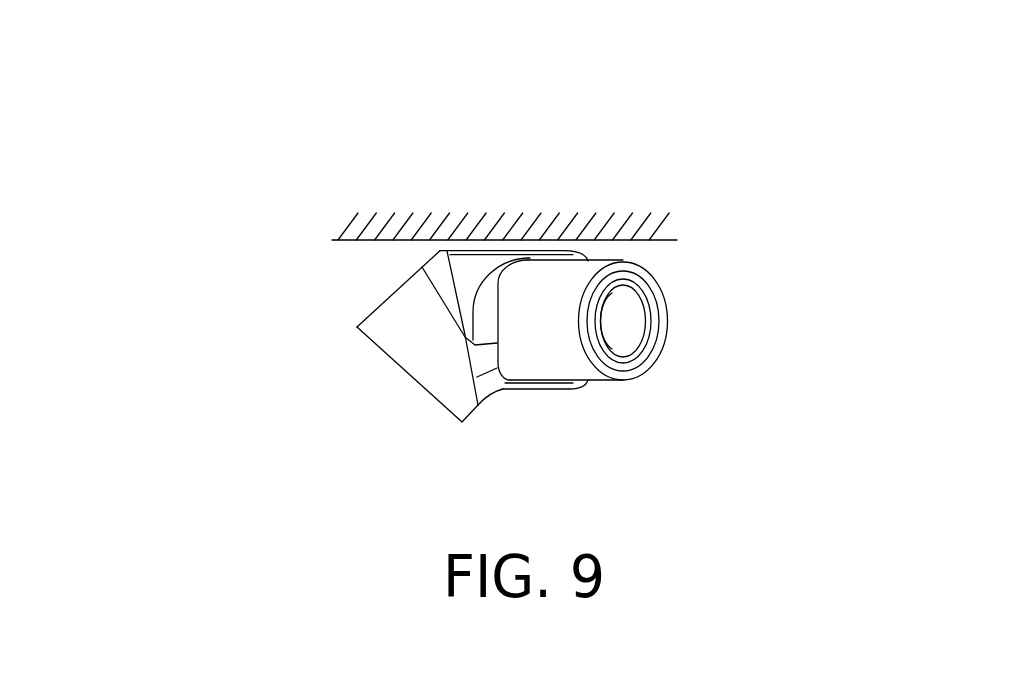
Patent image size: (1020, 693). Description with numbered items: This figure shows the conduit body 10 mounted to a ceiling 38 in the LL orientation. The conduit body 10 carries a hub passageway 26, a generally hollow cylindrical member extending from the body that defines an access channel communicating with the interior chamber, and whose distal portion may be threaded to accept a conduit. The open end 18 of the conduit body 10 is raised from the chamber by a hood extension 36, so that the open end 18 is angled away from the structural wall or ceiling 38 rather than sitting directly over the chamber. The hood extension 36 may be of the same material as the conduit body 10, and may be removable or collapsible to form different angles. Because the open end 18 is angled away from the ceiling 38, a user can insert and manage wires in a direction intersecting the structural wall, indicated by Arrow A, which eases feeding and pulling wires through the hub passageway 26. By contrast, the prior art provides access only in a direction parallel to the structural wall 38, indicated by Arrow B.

The conduit body 10 is at (556, 283).
The open end 18 is at (412, 403).
The hub passageway 26 is at (667, 322).
The hood extension 36 is at (395, 305).
The ceiling 38 is at (510, 223).
The Arrow A is at (342, 387).
The Arrow B is at (265, 352).